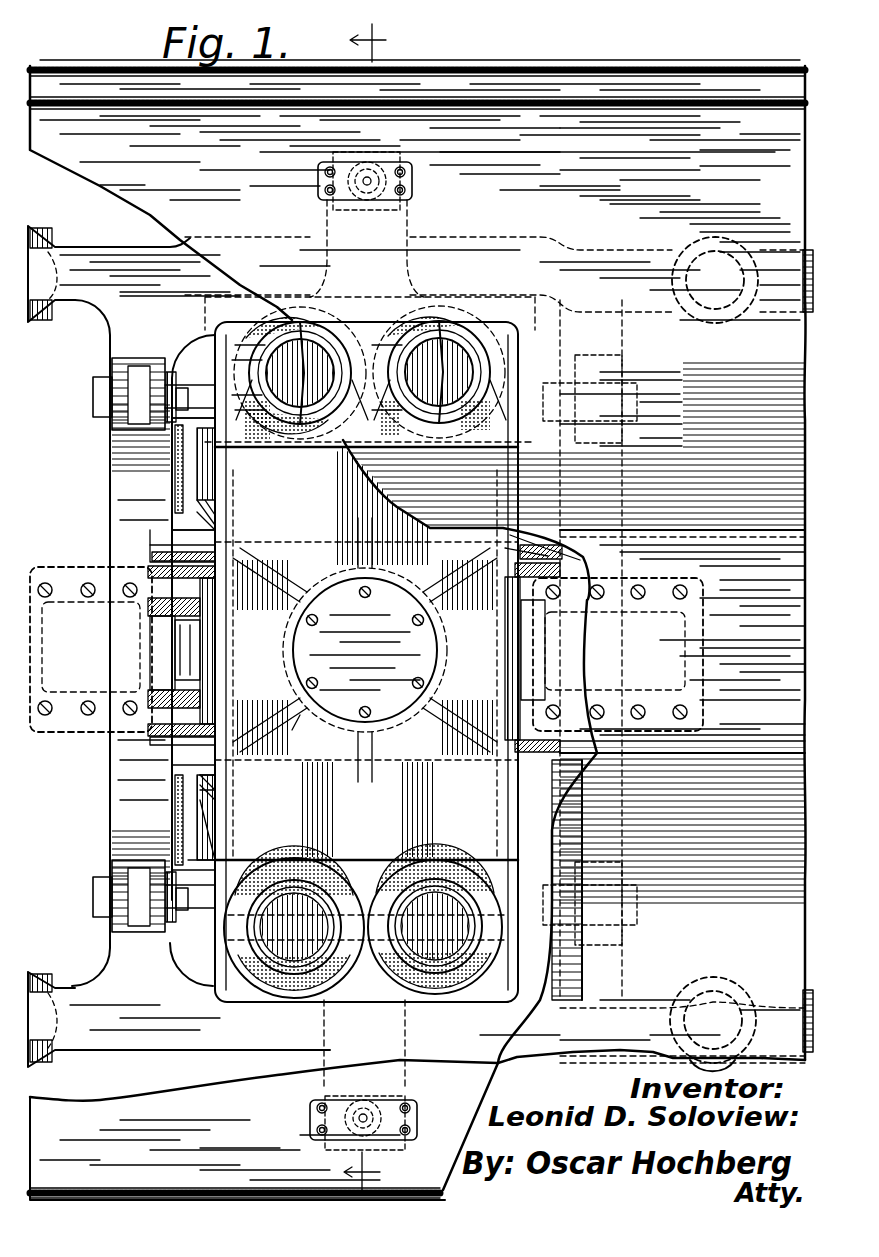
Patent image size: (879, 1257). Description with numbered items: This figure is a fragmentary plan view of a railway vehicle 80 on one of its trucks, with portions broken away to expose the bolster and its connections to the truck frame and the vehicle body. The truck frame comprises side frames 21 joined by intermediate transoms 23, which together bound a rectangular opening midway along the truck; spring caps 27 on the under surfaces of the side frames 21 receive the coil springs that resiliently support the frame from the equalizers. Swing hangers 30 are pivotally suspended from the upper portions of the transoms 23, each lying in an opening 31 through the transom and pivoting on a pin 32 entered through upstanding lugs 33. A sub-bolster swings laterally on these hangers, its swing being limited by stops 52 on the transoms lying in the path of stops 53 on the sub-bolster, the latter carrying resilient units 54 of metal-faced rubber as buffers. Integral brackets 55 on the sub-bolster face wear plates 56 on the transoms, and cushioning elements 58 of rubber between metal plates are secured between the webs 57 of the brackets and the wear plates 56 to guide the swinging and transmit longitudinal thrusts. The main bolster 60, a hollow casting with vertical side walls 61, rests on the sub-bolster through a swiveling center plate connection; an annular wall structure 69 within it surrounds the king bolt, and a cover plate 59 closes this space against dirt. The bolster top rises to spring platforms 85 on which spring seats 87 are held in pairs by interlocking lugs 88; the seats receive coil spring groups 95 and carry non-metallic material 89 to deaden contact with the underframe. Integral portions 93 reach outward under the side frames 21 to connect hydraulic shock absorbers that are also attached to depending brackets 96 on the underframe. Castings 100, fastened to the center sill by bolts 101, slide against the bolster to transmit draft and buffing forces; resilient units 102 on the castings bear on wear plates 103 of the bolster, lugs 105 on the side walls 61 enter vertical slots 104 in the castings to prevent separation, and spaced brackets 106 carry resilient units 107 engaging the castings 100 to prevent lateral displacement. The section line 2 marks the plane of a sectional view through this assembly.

The section line 2- 2 is at (368, 598).
The side frames 21 is at (182, 1085).
The intermediate transoms 23 is at (612, 805).
The spring caps 27 is at (740, 995).
The swing hangers 30 is at (620, 880).
The openings 31 is at (625, 932).
The pins 32 is at (628, 895).
The upstanding lugs 33 is at (110, 908).
The stops 52 is at (172, 780).
The stops 53 is at (210, 820).
The resilient units 54 is at (215, 790).
The brackets 55 is at (505, 840).
The wear plates 56 is at (500, 778).
The webs 57 is at (505, 812).
The cushioning elements 58 is at (505, 796).
The cover plate 59 is at (440, 610).
The main bolster 60 is at (545, 540).
The side walls 61 is at (370, 649).
The annular wall structure 69 is at (284, 730).
The vehicle 80 is at (510, 70).
The spring seat supporting portions 85 is at (355, 862).
The spring seats 87 is at (355, 1005).
The interlocking lugs 88 is at (520, 962).
The non-metallic material 89 is at (240, 980).
The outwardly directed integral portions 93 is at (315, 1082).
The coil spring groups 95 is at (480, 980).
The depending brackets 96 is at (308, 1118).
The castings 100 is at (705, 712).
The bolts 101 is at (85, 582).
The resilient units 102 is at (500, 720).
The wear plates 103 is at (525, 745).
The vertical slots 104 is at (520, 670).
The lugs 105 is at (600, 648).
The brackets 106 is at (158, 530).
The resilient units 107 is at (150, 742).